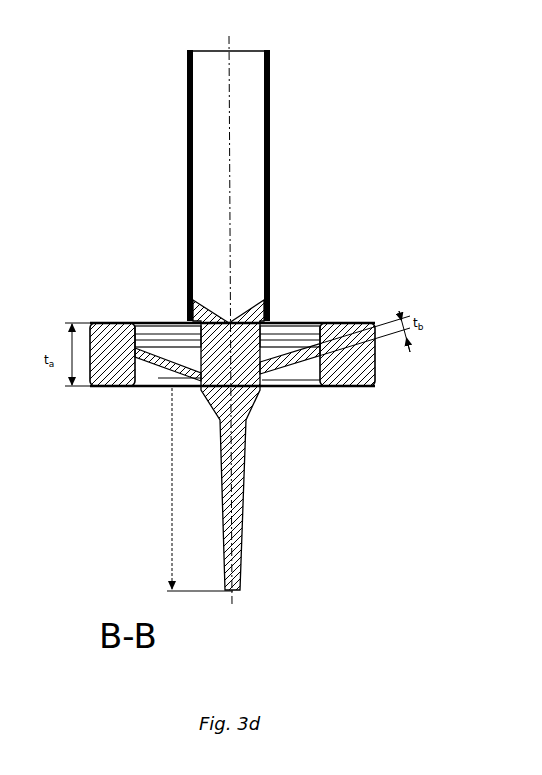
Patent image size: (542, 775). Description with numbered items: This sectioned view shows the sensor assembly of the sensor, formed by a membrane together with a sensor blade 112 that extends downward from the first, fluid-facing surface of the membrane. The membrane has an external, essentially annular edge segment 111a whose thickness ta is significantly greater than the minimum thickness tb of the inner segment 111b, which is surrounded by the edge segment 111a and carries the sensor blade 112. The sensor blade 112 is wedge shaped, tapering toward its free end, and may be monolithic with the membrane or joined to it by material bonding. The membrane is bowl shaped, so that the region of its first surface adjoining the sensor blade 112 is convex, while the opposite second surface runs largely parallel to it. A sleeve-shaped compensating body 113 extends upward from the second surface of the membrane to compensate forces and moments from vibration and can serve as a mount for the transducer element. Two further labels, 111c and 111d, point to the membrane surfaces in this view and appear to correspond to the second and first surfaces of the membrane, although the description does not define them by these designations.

The edge segment 111a is at (114, 340).
The inner segment 111b is at (161, 358).
The right flange with wedge layer 111c is at (276, 356).
The lower layer 111d is at (298, 381).
The sensor blade 112 is at (236, 481).
The compensating body 113 is at (246, 164).